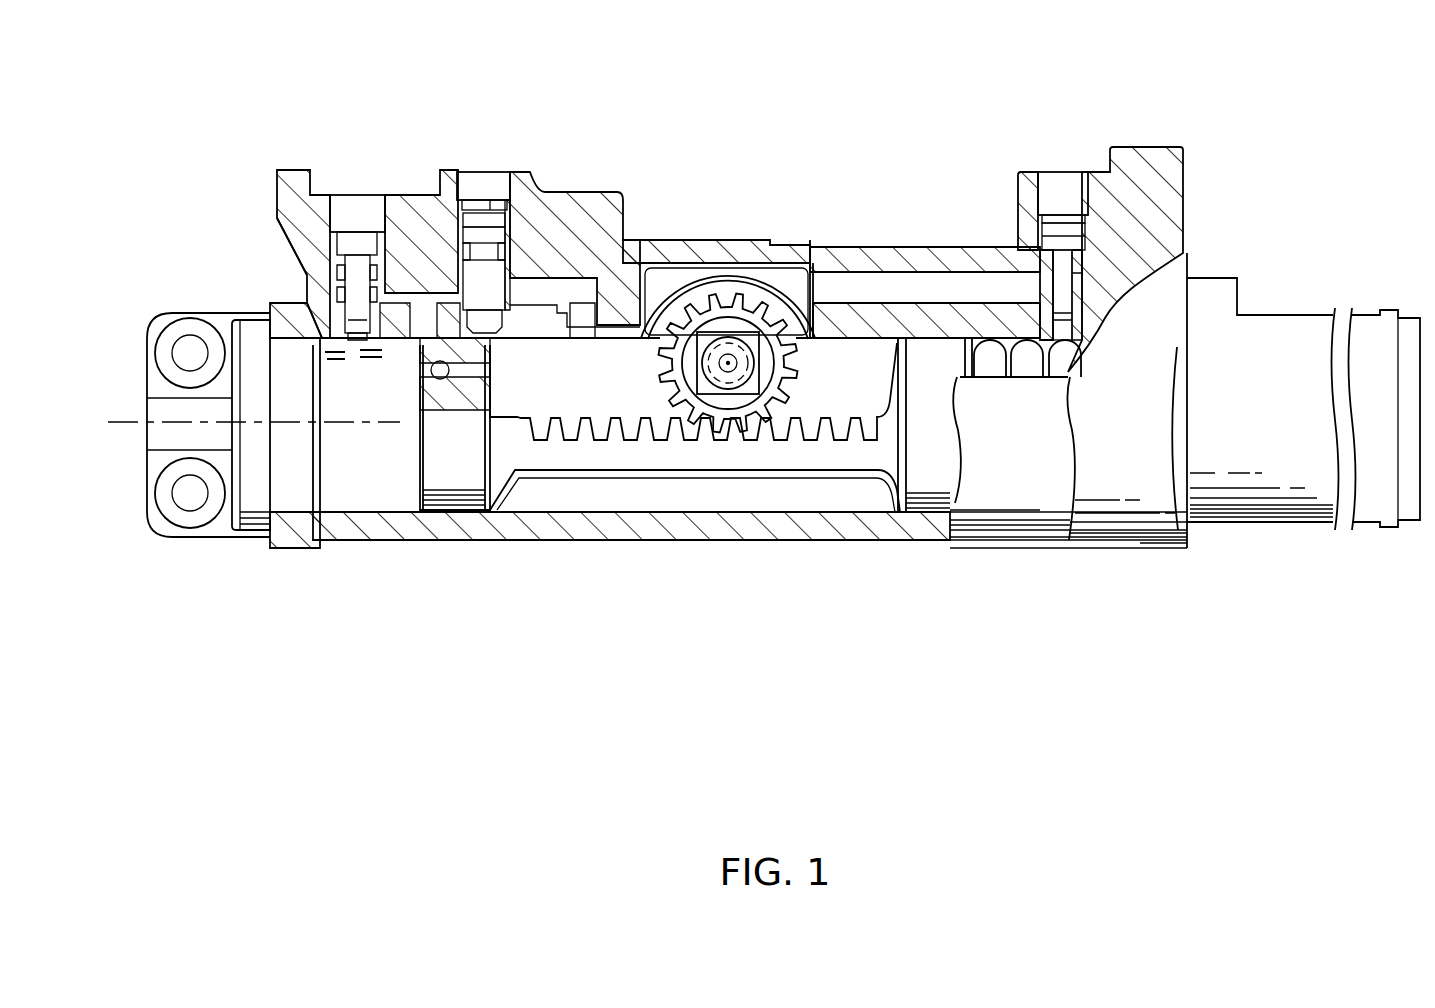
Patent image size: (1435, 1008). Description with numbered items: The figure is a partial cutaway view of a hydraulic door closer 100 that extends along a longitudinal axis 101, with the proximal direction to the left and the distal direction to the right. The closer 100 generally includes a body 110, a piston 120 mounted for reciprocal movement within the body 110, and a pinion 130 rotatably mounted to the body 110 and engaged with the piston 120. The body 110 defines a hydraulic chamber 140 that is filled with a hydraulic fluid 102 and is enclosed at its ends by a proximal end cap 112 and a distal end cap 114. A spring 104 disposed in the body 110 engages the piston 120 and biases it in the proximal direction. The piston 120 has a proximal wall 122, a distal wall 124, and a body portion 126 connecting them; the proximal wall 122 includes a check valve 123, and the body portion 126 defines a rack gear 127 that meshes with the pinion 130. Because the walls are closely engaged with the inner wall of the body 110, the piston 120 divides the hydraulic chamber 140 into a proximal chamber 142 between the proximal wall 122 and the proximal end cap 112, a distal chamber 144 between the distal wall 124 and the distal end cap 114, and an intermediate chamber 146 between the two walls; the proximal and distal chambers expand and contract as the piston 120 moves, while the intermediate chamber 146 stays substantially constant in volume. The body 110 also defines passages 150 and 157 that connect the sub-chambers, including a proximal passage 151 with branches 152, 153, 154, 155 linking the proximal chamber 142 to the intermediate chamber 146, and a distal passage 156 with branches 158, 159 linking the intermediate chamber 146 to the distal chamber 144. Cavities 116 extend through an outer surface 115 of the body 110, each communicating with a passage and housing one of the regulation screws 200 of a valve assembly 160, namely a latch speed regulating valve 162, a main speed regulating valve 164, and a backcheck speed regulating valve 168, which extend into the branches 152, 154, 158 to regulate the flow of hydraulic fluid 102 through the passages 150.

The door closer 100 is at (325, 82).
The longitudinal axis 101 is at (133, 422).
The hydraulic fluid 102 is at (331, 333).
The spring 104 is at (1030, 358).
The body 110 is at (785, 342).
The proximal end cap 112 is at (254, 502).
The distal end cap 114 is at (1418, 312).
The outer surface 115 is at (458, 170).
The cavities 116 is at (365, 198).
The piston 120 is at (582, 494).
The proximal wall 122 is at (459, 484).
The check valve 123 is at (415, 380).
The distal wall 124 is at (928, 480).
The body portion 126 is at (766, 462).
The rack gear 127 is at (636, 411).
The pinion 130 is at (719, 293).
The hydraulic chamber 140 is at (356, 490).
The proximal chamber 142 is at (385, 490).
The distal chamber 144 is at (1006, 474).
The intermediate chamber 146 is at (824, 492).
The passages 150 is at (596, 260).
The proximal passage 151 is at (524, 300).
The branch 152 is at (353, 343).
The branch 153 is at (410, 338).
The branch 154 is at (490, 365).
The branch 155 is at (582, 322).
The distal passage 156 is at (862, 272).
The passage 157 is at (990, 251).
The branch 158 is at (1050, 330).
The branch 159 is at (926, 311).
The valve assembly 160 is at (262, 186).
The latch speed regulating valve 162 is at (320, 252).
The main speed regulating valve 164 is at (525, 240).
The backcheck speed regulating valve 168 is at (1099, 228).
The regulation screws 200 is at (390, 256).